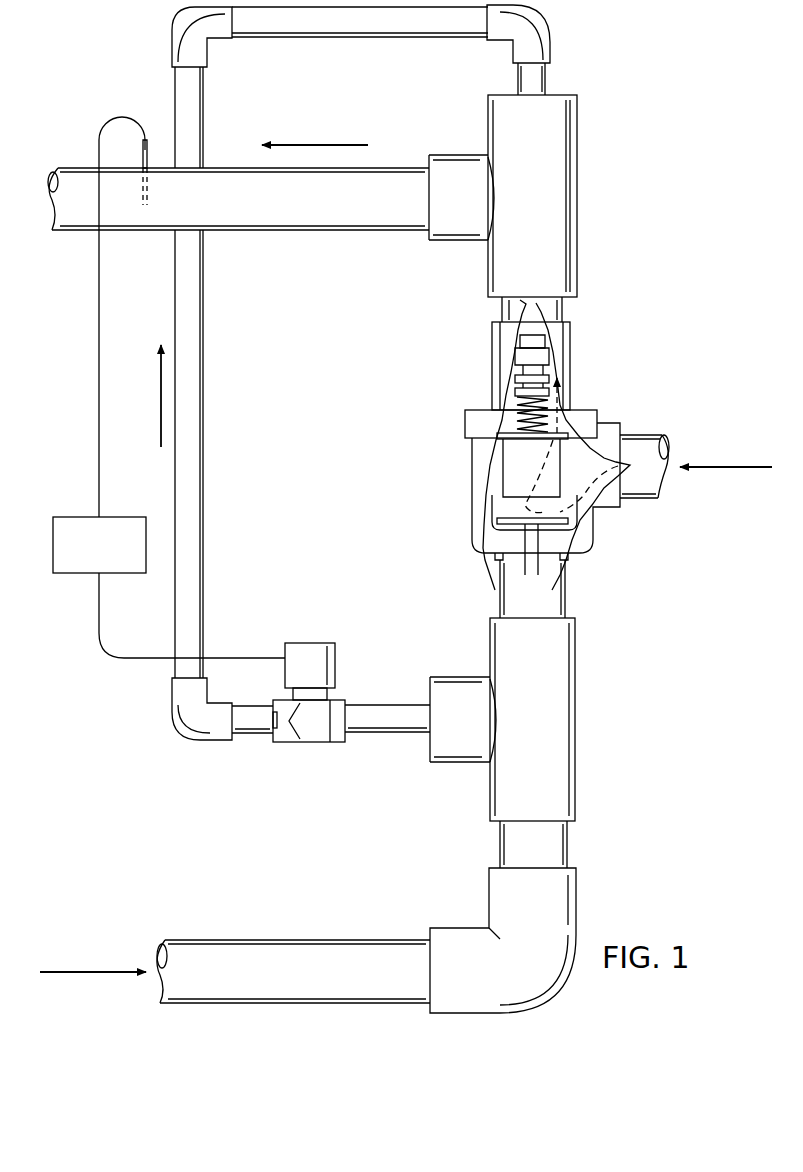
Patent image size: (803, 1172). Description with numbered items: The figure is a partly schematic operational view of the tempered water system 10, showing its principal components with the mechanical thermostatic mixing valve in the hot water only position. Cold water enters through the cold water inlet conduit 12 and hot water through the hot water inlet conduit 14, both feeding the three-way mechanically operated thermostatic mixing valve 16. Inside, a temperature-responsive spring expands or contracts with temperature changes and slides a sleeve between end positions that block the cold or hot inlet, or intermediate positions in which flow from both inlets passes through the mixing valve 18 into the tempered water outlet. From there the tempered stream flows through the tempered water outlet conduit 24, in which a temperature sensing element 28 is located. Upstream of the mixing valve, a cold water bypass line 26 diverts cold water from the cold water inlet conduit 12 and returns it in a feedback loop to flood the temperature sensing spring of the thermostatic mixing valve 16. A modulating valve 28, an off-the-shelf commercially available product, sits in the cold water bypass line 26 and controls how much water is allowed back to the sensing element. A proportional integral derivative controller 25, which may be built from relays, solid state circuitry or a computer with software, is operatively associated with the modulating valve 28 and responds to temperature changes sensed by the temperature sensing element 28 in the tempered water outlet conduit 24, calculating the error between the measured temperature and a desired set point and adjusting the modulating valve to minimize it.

The tempered water system 10 is at (652, 98).
The cold water inlet conduit 12 is at (300, 938).
The hot water inlet conduit 14 is at (640, 500).
The thermostatic mixing valve 16 is at (624, 393).
The mixing valve 18 is at (488, 343).
The tempered water outlet conduit 24 is at (322, 232).
The PID controller 25 is at (86, 578).
The cold water bypass line 26 is at (204, 424).
The modulating valve 28 is at (141, 150).